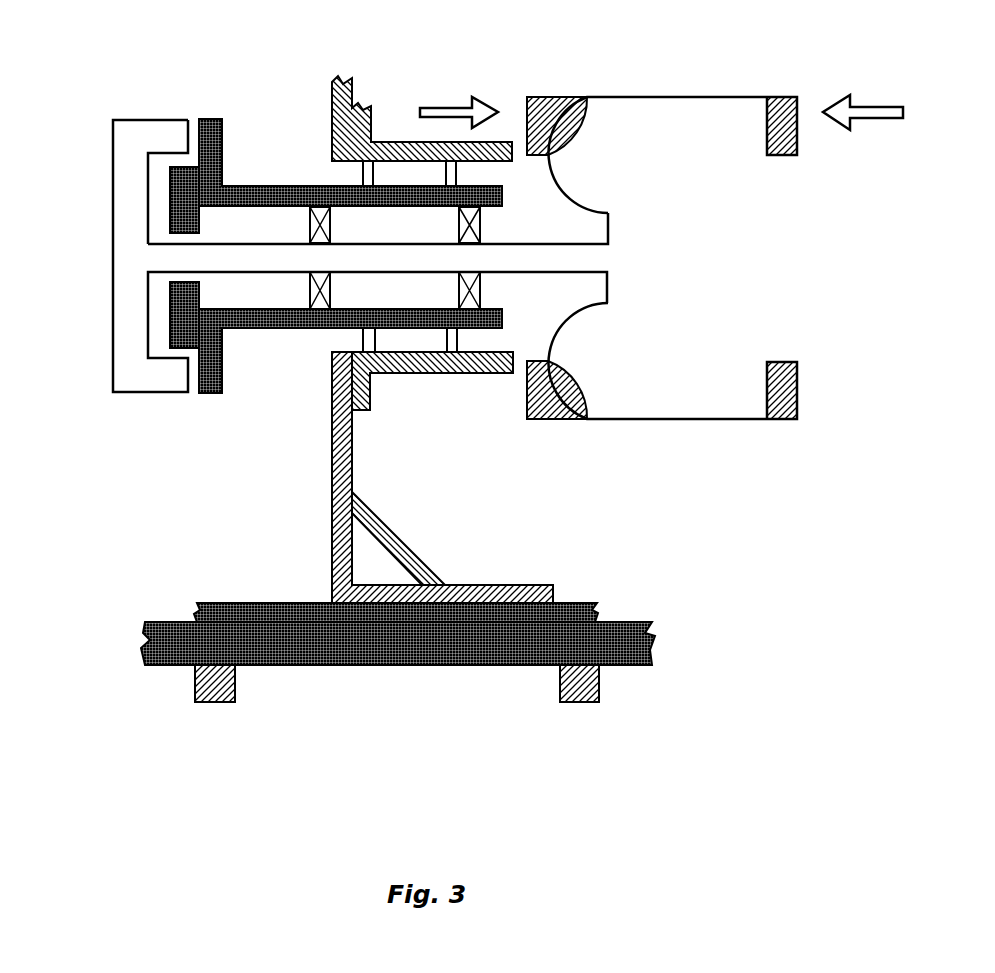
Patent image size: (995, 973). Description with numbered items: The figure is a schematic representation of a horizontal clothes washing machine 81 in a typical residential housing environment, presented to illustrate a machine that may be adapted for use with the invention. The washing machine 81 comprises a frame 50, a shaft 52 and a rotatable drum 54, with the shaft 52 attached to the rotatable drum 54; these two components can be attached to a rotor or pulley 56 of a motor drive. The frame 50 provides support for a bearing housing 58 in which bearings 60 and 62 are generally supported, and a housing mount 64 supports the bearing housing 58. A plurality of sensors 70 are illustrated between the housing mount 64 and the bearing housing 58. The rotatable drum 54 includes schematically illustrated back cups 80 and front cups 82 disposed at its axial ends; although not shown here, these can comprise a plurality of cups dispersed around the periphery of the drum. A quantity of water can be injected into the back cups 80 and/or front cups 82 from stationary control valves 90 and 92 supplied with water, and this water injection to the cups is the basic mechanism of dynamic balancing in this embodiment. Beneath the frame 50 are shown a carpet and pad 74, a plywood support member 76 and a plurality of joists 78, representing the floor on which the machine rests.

The washing machine 81 is at (205, 78).
The rotor or pulley 56 is at (127, 260).
The bearing housing 58 is at (212, 395).
The bearing 60 is at (310, 225).
The bearing 62 is at (459, 225).
The housing mount 64 is at (387, 142).
The sensors 70 is at (363, 172).
The shaft 52 is at (561, 258).
The rotatable drum 54 is at (722, 420).
The back cups 80 is at (527, 400).
The frame 50 is at (332, 455).
The carpet and pad 74 is at (267, 603).
The plywood support member 76 is at (171, 622).
The joists 78 is at (216, 702).
The front cups 82 is at (797, 408).
The stationary control valve 90 is at (482, 97).
The stationary control valve 92 is at (835, 95).